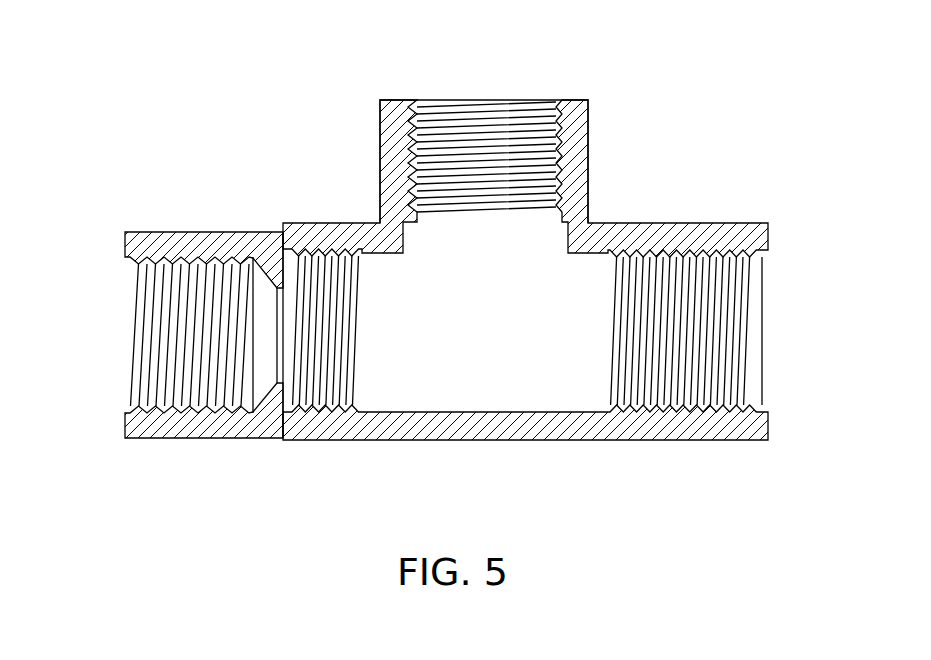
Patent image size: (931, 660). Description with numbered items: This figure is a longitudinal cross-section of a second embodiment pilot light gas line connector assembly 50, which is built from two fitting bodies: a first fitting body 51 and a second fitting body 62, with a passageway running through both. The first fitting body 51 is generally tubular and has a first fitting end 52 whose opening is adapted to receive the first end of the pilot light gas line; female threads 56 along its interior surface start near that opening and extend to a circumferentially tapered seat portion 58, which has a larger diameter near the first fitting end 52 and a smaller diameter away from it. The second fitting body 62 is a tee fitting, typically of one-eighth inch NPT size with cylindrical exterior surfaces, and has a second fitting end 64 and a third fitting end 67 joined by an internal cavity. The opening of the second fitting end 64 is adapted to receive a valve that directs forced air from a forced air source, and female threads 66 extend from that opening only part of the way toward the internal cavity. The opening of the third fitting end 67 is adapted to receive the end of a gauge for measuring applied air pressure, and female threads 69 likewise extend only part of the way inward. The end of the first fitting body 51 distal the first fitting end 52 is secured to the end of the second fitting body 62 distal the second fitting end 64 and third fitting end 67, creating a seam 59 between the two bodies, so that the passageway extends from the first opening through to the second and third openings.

The pilot light gas line connector assembly 50 is at (678, 150).
The first fitting body 51 is at (183, 250).
The first fitting end 52 is at (112, 338).
The female threads 56 is at (168, 262).
The circumferentially tapered seat portion 58 is at (252, 392).
The seam 59 is at (283, 232).
The second fitting body 62 is at (556, 422).
The second fitting end 64 is at (780, 338).
The female threads 66 is at (718, 254).
The third fitting end 67 is at (470, 78).
The female threads 69 is at (548, 152).